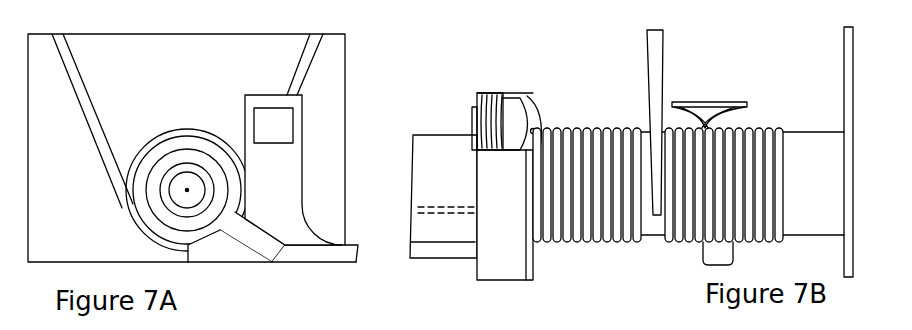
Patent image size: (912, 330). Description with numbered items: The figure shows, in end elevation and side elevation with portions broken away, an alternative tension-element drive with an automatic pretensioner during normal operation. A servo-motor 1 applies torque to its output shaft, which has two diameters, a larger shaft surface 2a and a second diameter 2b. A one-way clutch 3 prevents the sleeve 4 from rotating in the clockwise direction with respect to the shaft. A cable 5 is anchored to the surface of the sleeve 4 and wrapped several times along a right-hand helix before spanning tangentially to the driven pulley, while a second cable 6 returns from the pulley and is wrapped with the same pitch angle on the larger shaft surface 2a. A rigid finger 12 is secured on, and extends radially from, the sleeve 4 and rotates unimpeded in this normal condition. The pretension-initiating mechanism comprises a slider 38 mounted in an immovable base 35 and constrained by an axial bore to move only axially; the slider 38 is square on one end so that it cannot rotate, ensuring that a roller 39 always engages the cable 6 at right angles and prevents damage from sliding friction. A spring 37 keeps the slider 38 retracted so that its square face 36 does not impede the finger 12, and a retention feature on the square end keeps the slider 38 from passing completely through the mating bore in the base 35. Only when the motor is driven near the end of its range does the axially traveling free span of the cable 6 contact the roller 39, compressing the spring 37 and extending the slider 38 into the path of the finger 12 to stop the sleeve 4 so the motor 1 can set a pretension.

In FIG. 7A, the servo-motor 1 is at (167, 54).
In FIG. 7B, the servo-motor 1 is at (843, 67).
In FIG. 7A, the larger shaft surface 2a is at (186, 189).
In FIG. 7B, the shaft diameter 2b is at (818, 129).
In FIG. 7A, the one-way clutch 3 is at (182, 168).
In FIG. 7A, the sleeve 4 is at (185, 146).
In FIG. 7B, the sleeve 4 is at (412, 146).
In FIG. 7A, the cable 5 is at (128, 183).
In FIG. 7B, the cable 5 is at (645, 116).
In FIG. 7A, the second cable 6 is at (305, 79).
In FIG. 7B, the second cable 6 is at (665, 102).
In FIG. 7A, the rigid finger 12 is at (272, 233).
In FIG. 7B, the rigid finger 12 is at (452, 230).
In FIG. 7A, the immovable base 35 is at (364, 259).
In FIG. 7B, the immovable base 35 is at (477, 270).
In FIG. 7A, the square face 36 is at (297, 120).
In FIG. 7B, the square face 36 is at (470, 118).
In FIG. 7B, the spring 37 is at (488, 96).
In FIG. 7B, the slider 38 is at (533, 96).
In FIG. 7B, the roller 39 is at (547, 117).